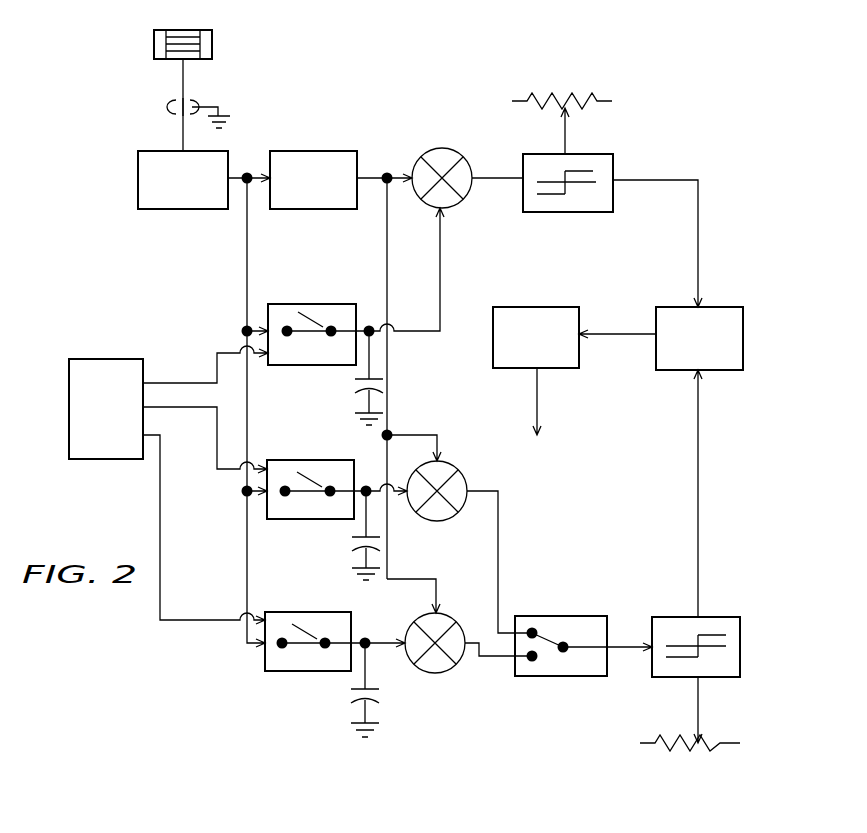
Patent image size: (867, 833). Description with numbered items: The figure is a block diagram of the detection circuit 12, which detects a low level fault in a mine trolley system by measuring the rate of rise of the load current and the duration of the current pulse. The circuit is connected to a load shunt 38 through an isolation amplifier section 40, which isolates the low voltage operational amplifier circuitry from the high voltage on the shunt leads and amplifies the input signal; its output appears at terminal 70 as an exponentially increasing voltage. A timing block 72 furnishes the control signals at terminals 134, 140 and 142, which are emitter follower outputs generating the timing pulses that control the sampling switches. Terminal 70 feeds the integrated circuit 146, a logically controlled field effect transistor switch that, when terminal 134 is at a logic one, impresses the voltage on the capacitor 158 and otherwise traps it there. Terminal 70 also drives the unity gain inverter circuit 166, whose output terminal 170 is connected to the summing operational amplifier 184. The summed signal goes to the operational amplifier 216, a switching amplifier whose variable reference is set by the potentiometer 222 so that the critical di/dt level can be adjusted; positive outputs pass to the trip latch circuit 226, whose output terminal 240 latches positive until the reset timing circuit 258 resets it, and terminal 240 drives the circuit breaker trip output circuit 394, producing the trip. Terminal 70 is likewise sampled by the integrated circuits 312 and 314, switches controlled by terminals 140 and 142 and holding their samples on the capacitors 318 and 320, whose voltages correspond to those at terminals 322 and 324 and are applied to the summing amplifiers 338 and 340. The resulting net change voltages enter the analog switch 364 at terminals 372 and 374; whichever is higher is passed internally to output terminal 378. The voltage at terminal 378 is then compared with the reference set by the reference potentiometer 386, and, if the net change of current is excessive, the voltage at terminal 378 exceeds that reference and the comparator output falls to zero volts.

The detection circuit 12 is at (406, 95).
The load shunt 38 is at (212, 44).
The isolation amplifier section 40 is at (138, 166).
The terminal 70 is at (247, 172).
The timing/control circuit 72 is at (115, 359).
The terminal 134 is at (185, 383).
The output terminal 140 is at (180, 407).
The output terminal 142 is at (200, 620).
The integrated circuit 146 is at (296, 365).
The capacitor 158 is at (360, 392).
The unity gain inverter circuit 166 is at (333, 151).
The output terminal 170 is at (386, 173).
The summing operational amplifier 184 is at (442, 148).
The operational amplifier 216 is at (556, 212).
The potentiometer 222 is at (565, 101).
The trip latch circuit 226 is at (713, 307).
The output terminal 240 is at (585, 336).
The reset timing circuit 258 is at (712, 617).
The integrated circuit 312 is at (296, 519).
The integrated circuit 314 is at (287, 671).
The capacitor 318 is at (362, 549).
The capacitor 320 is at (360, 701).
The terminal 322 is at (401, 505).
The terminal 324 is at (407, 664).
The summing amplifier 338 is at (467, 483).
The summing amplifier 340 is at (449, 620).
The analog switch 364 is at (558, 676).
The terminal 372 is at (531, 628).
The terminal 374 is at (528, 662).
The terminal 378 is at (650, 645).
The reference potentiometer 386 is at (718, 750).
The circuit breaker trip output circuit 394 is at (548, 307).